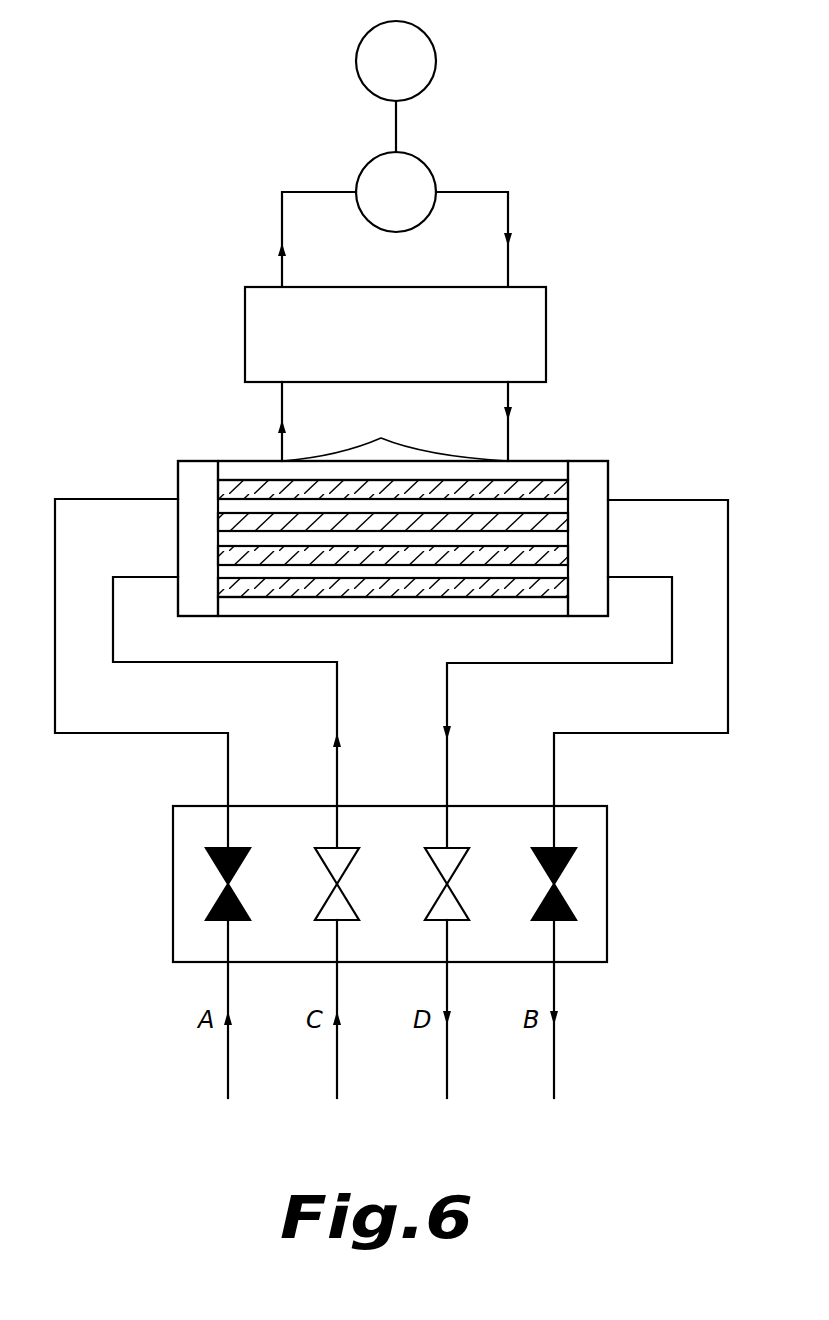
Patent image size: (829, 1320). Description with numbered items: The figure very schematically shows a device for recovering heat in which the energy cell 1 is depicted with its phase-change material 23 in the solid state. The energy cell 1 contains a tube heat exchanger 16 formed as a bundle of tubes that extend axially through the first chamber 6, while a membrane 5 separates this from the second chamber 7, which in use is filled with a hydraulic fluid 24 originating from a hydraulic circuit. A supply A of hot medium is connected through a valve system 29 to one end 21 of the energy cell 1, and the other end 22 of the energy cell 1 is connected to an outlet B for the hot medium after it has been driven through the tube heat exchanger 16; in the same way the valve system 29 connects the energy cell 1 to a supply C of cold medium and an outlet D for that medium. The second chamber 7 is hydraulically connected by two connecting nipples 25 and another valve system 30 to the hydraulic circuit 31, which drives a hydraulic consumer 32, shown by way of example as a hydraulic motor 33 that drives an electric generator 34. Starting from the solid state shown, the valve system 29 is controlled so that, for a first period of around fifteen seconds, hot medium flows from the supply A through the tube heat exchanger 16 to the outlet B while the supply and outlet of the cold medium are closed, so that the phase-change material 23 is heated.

The energy cell 1 is at (400, 506).
The membrane 5 is at (257, 479).
The first chamber 6 is at (553, 492).
The second chamber 7 is at (530, 471).
The tube heat exchanger 16 is at (418, 525).
The end of the energy cell 21 is at (199, 472).
The other end of the energy cell 22 is at (602, 478).
The phase-change material 23 is at (398, 592).
The hydraulic fluid 24 is at (350, 609).
The connecting nipples 25 is at (395, 436).
The valve system 29 is at (607, 884).
The valve system 30 is at (546, 315).
The hydraulic circuit 31 is at (440, 326).
The hydraulic consumer 32 is at (414, 116).
The hydraulic motor 33 is at (365, 168).
The electric generator 34 is at (360, 43).